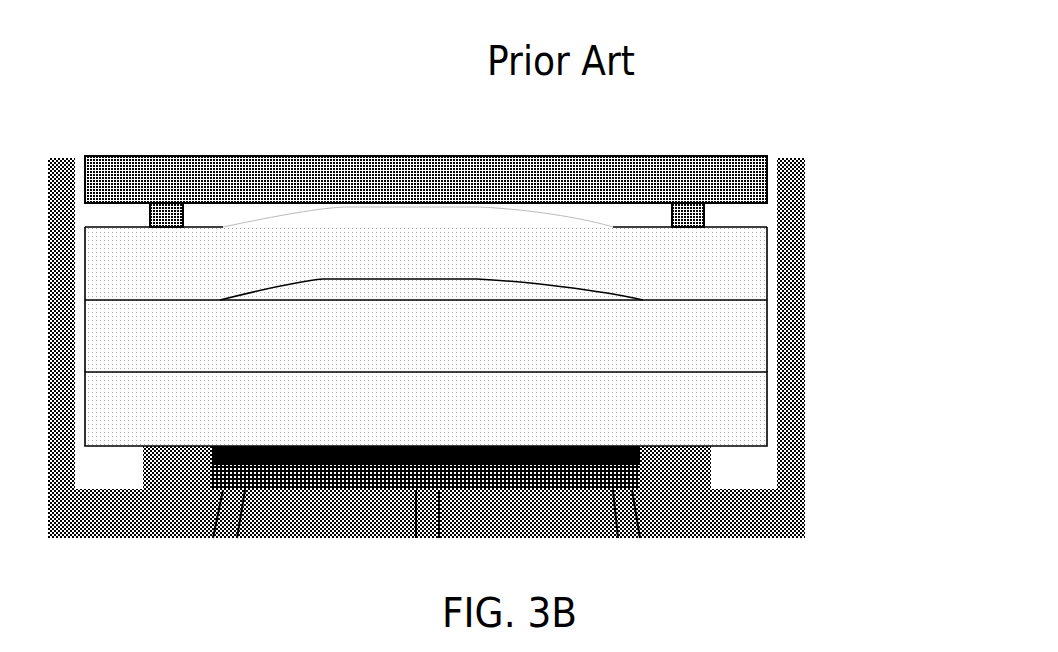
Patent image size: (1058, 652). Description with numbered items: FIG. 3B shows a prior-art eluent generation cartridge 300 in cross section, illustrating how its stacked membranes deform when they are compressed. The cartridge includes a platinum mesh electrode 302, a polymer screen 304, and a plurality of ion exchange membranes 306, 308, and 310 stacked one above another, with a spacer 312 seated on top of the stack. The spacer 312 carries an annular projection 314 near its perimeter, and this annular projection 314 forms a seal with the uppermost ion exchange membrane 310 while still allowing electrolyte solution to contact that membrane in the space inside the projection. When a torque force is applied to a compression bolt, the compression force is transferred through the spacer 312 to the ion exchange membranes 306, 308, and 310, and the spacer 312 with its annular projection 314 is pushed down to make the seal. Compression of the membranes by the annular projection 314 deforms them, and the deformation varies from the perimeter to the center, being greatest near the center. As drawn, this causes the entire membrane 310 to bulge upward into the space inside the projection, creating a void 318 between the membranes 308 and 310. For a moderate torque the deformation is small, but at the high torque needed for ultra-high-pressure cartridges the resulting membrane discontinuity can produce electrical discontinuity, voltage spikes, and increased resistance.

The eluent generation cartridge 300 is at (478, 128).
The platinum mesh electrode 302 is at (807, 503).
The polymer screen 304 is at (711, 460).
The ion exchange membrane 306 is at (699, 413).
The ion exchange membrane 308 is at (705, 336).
The ion exchange membrane 310 is at (705, 250).
The spacer 312 is at (667, 168).
The annular projection 314 is at (694, 214).
The void 318 is at (421, 285).